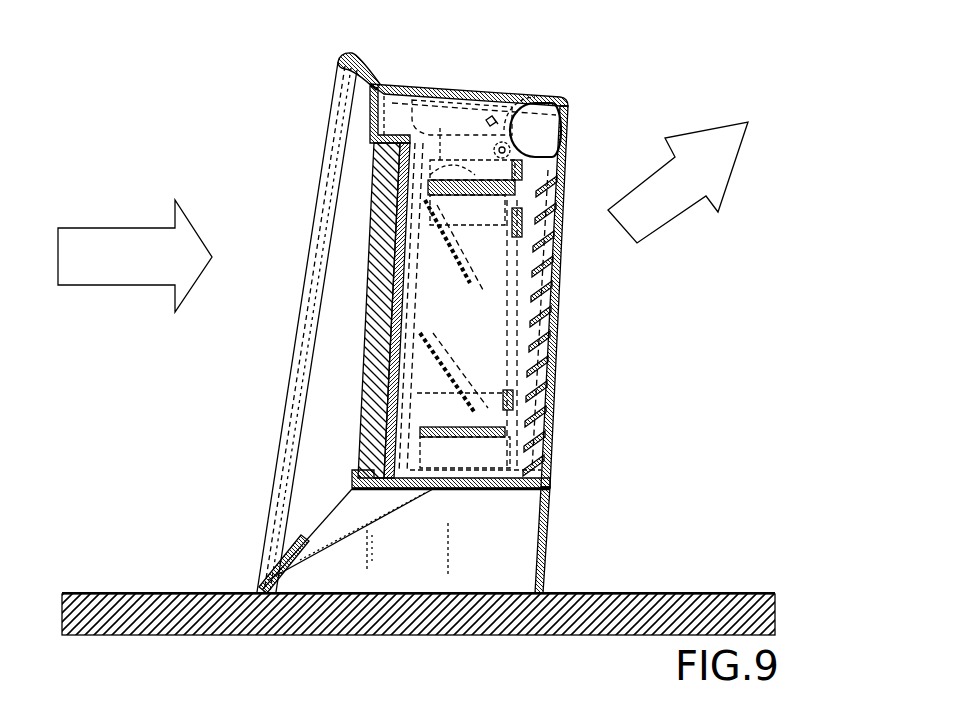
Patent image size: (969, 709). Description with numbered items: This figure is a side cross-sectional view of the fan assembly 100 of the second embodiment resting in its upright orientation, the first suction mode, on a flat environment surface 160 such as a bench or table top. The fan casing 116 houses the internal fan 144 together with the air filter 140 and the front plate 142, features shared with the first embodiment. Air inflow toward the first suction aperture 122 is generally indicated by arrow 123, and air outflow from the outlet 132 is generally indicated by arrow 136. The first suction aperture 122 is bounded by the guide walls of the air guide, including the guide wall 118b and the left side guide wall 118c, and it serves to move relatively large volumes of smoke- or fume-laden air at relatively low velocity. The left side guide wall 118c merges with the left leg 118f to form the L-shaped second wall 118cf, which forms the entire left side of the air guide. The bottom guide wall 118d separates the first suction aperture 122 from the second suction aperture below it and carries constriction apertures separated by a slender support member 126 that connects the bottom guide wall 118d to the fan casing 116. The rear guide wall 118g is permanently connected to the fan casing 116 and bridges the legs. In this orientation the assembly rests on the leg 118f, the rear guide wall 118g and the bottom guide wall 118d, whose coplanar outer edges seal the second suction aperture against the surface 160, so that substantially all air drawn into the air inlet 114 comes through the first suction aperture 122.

The fan assembly 100 is at (630, 50).
The air inlet 114 is at (350, 216).
The fan casing 116 is at (518, 96).
The guide wall 118b is at (358, 70).
The left side guide wall 118c is at (282, 420).
The second wall 118cf is at (287, 545).
The bottom guide wall 118d is at (291, 547).
The left leg 118f is at (466, 574).
The rear guide wall 118g is at (545, 553).
The first suction aperture 122 is at (275, 243).
The arrow indicating air inflow 123 is at (115, 222).
The slender support member 126 is at (405, 508).
The outlet 132 is at (588, 176).
The arrow indicating air outflow 136 is at (735, 172).
The air filter 140 is at (373, 173).
The front plate 142 is at (370, 107).
The fan 144 is at (457, 365).
The flat environment surface 160 is at (108, 600).